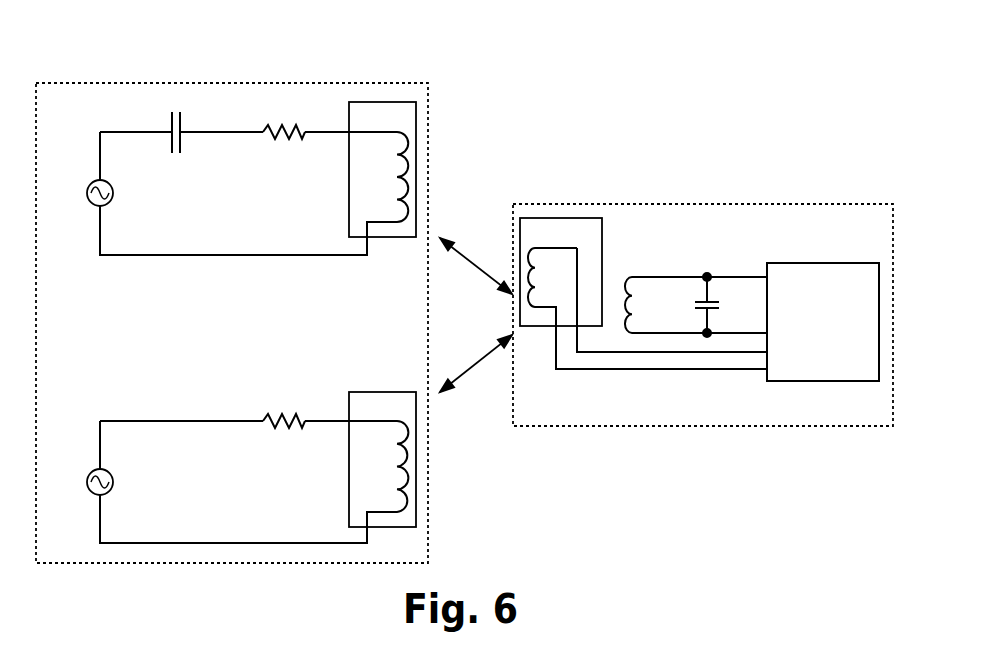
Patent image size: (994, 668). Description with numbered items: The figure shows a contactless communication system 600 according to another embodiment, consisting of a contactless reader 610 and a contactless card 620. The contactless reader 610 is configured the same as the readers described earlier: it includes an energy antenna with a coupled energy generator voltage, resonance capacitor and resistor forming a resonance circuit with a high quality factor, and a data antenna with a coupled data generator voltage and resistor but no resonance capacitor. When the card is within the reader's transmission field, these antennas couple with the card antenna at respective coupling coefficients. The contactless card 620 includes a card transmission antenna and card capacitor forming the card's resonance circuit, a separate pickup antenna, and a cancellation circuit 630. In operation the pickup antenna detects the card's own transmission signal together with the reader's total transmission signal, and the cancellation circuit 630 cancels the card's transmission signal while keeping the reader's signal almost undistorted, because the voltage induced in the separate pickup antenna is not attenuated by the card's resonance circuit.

The contactless communication system 600 is at (731, 106).
The contactless reader 610 is at (343, 83).
The contactless card 620 is at (805, 203).
The cancellation circuit 630 is at (813, 263).